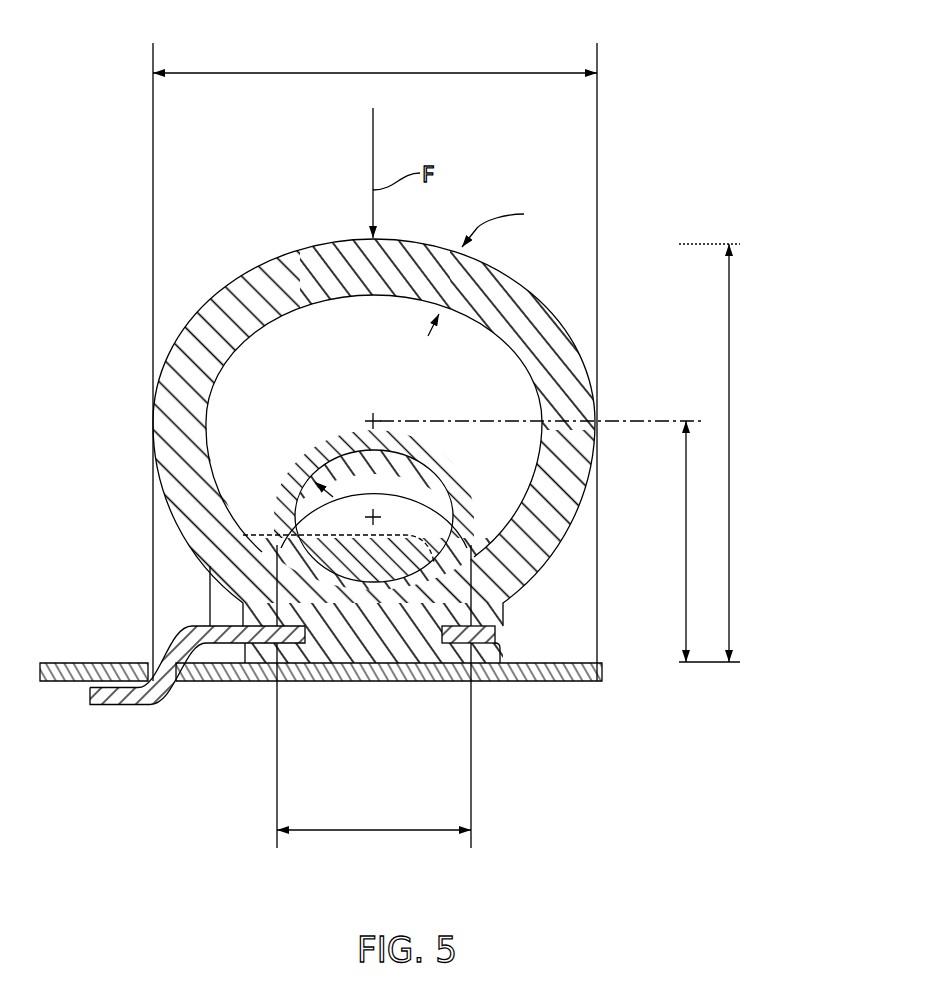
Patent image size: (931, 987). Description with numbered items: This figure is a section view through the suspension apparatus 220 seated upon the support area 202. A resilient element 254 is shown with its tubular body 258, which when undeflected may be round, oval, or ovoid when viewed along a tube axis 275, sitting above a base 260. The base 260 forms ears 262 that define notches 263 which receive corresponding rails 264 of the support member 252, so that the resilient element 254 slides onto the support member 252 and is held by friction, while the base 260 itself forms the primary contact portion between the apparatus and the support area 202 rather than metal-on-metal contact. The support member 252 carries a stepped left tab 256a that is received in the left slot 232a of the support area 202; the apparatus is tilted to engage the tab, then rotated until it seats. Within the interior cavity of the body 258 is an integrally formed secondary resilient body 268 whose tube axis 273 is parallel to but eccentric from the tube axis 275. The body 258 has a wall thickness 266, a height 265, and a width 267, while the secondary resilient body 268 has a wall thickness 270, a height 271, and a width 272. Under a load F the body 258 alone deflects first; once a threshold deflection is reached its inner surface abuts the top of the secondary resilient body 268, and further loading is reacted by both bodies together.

The support area 202 is at (80, 662).
The suspension apparatus 220 is at (186, 618).
The left slot 232a is at (170, 706).
The support member 252 is at (210, 597).
The resilient element 254 is at (320, 243).
The left tab 256a is at (160, 660).
The tubular body 258 is at (577, 352).
The base 260 is at (354, 658).
The ears 262 is at (264, 655).
The notches 263 is at (500, 637).
The rails 264 is at (236, 650).
The height 265 is at (731, 573).
The wall thickness 266 is at (496, 268).
The width 267 is at (360, 73).
The secondary resilient body 268 is at (460, 477).
The wall thickness 270 is at (288, 458).
The height 271 is at (685, 573).
The width 272 is at (378, 832).
The tube axis 273 is at (375, 515).
The tube axis 275 is at (375, 418).